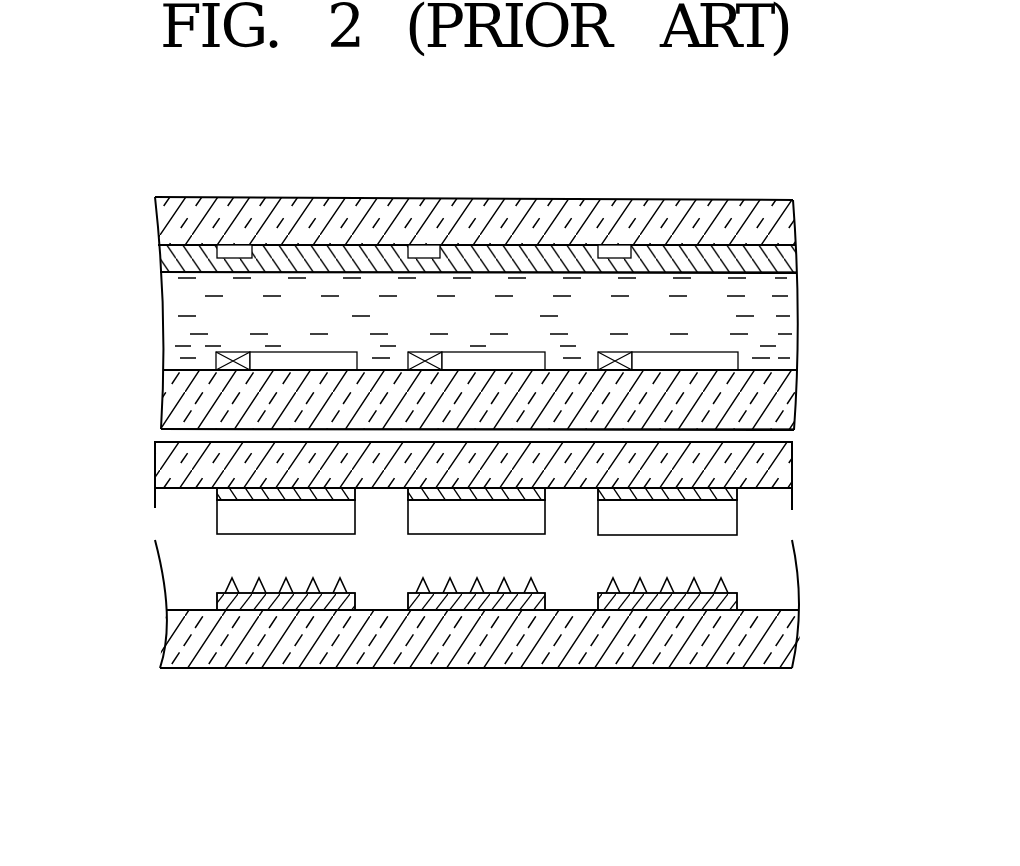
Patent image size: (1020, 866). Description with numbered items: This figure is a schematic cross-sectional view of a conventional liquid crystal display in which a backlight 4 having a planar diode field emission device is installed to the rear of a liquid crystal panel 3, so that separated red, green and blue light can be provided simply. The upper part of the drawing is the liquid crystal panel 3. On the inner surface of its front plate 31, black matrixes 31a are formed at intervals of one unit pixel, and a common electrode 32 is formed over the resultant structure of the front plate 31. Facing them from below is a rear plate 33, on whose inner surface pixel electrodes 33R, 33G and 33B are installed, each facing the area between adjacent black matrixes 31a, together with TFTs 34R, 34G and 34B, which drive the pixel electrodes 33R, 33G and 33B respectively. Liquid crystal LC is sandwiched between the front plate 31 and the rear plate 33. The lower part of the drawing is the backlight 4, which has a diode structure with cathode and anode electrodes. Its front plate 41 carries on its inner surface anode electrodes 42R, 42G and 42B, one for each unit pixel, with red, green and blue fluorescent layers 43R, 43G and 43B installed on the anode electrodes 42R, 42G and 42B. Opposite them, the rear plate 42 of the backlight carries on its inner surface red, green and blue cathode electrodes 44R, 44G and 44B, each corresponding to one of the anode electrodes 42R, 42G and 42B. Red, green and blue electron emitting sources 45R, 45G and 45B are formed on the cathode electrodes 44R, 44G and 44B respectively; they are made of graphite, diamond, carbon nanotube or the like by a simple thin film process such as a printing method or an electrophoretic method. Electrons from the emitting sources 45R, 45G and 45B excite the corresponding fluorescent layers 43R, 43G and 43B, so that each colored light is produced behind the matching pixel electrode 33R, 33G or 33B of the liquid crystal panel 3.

The liquid crystal panel 3 is at (108, 283).
The backlight 4 is at (108, 503).
The front plate 31 is at (773, 229).
The black matrixes 31a is at (617, 247).
The common electrode 32 is at (773, 268).
The liquid crystal LC is at (775, 330).
The rear plate 33 is at (773, 410).
The TFT 34R is at (233, 351).
The pixel electrode 33R is at (305, 362).
The TFT 34G is at (424, 351).
The pixel electrode 33G is at (492, 360).
The TFT 34B is at (613, 352).
The pixel electrode 33B is at (679, 358).
The front plate 41 is at (775, 468).
The rear plate 42 is at (773, 648).
The anode electrode 42R is at (218, 495).
The anode electrode 42G is at (533, 498).
The anode electrode 42B is at (735, 500).
The fluorescent layer 43R is at (246, 524).
The fluorescent layer 43G is at (513, 525).
The fluorescent layer 43B is at (708, 527).
The cathode electrode 44R is at (287, 598).
The cathode electrode 44G is at (475, 601).
The cathode electrode 44B is at (665, 608).
The electron emitting source 45R is at (285, 585).
The electron emitting source 45G is at (450, 587).
The electron emitting source 45B is at (662, 587).